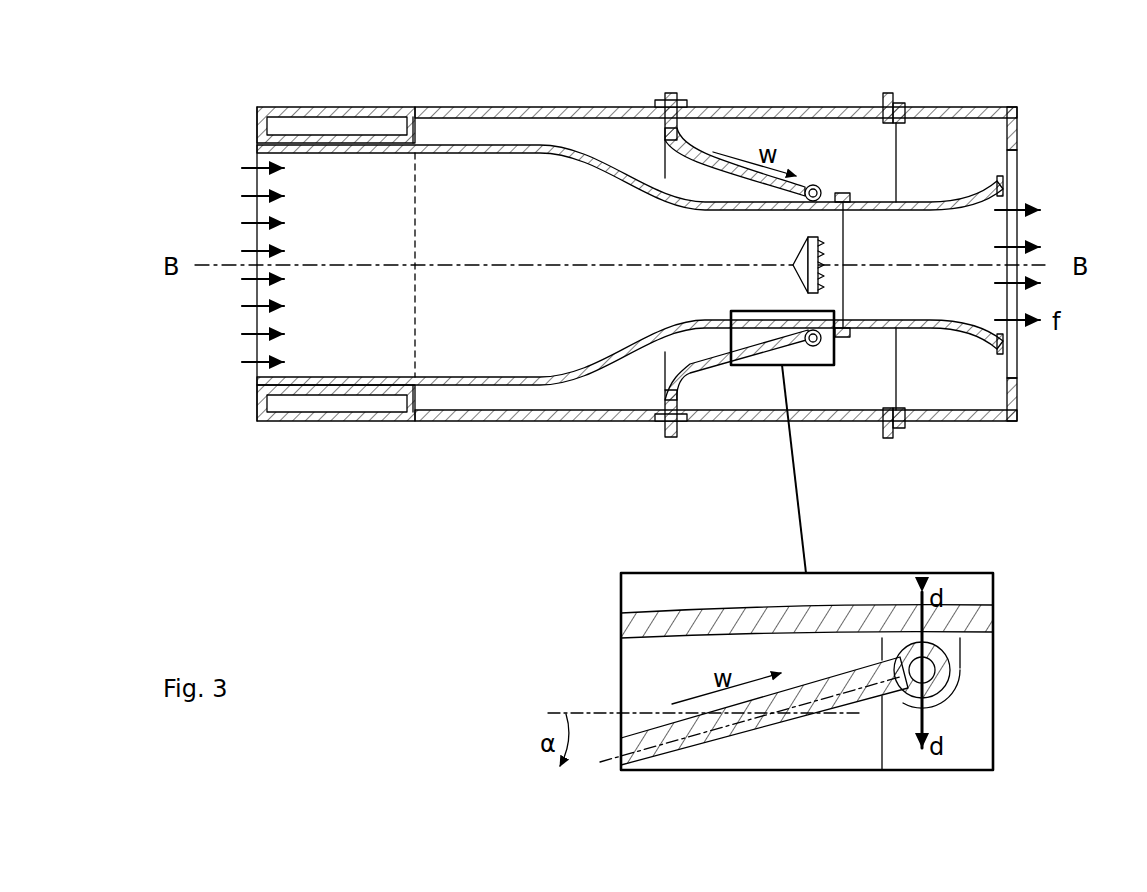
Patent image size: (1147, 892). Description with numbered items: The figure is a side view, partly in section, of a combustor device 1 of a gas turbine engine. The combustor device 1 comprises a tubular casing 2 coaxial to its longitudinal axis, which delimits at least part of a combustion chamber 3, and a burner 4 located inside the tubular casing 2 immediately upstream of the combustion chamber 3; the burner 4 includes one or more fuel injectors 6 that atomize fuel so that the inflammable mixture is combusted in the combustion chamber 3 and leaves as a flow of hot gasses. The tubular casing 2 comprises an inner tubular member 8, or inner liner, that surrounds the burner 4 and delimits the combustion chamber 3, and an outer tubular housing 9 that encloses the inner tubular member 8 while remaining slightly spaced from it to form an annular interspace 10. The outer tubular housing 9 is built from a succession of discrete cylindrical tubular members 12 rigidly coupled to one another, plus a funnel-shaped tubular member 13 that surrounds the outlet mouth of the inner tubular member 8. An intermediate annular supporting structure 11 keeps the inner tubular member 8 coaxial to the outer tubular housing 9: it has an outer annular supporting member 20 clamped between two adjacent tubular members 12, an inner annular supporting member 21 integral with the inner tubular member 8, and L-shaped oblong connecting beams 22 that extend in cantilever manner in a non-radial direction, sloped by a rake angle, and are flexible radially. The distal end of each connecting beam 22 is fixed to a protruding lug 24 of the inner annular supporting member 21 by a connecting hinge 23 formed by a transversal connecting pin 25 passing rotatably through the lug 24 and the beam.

The combustor device 1 is at (246, 461).
The tubular casing 2 is at (271, 104).
The combustion chamber 3 is at (925, 217).
The burner 4 is at (827, 287).
The fuel injector 6 is at (819, 253).
The inner tubular member 8 is at (366, 152).
The outer tubular housing 9 is at (366, 105).
The annular interspace 10 is at (617, 122).
The intermediate annular supporting structure 11 is at (745, 136).
The tubular member 12 is at (485, 112).
The funnel-shaped tubular member 13 is at (986, 107).
The outer annular supporting member 20 is at (670, 93).
The inner annular supporting member 21 is at (812, 208).
The oblong connecting beam 22 is at (730, 173).
The connecting hinge 23 is at (821, 185).
The protruding lug 24 is at (961, 673).
The transversal connecting pin 25 is at (903, 704).